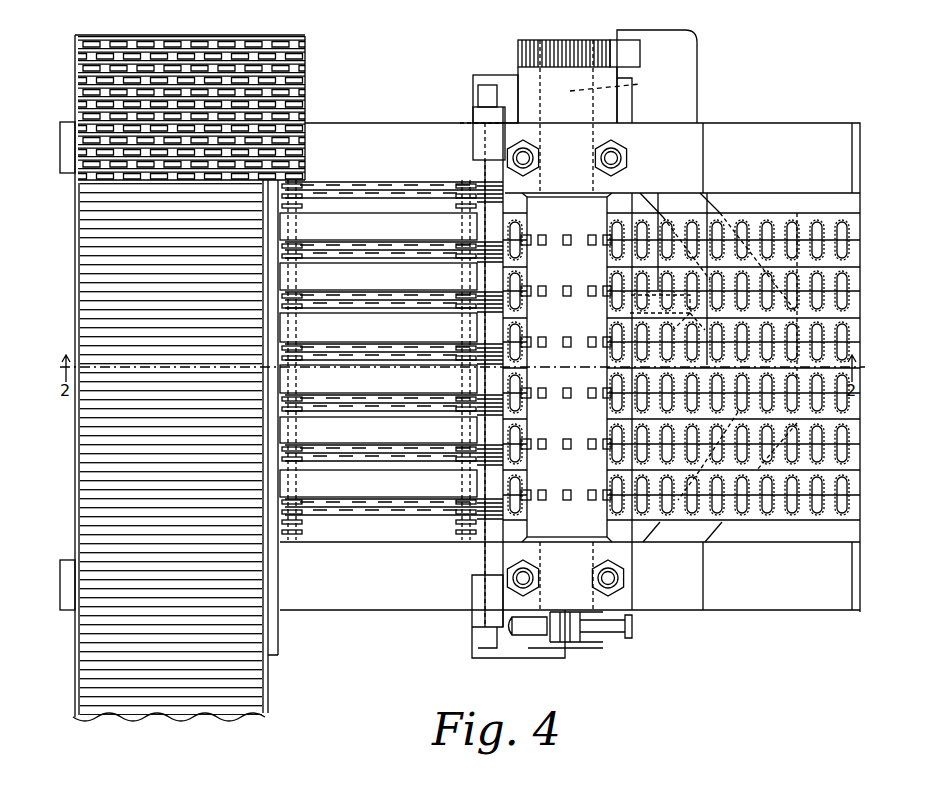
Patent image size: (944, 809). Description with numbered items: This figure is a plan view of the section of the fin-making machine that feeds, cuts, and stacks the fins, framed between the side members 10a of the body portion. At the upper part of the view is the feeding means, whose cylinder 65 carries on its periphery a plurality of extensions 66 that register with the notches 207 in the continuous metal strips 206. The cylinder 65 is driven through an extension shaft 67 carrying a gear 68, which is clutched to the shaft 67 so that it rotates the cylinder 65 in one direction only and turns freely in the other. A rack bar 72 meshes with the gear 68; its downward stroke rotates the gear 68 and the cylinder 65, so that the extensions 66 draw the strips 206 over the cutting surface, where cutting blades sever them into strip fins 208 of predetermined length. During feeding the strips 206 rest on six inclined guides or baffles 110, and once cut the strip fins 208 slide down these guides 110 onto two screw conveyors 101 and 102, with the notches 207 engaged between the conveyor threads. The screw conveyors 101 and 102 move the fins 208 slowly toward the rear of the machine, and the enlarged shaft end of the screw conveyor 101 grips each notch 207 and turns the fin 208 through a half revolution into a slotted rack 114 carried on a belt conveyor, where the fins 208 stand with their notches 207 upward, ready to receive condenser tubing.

The side members 10a is at (797, 130).
The cylinder 65 is at (585, 212).
The extensions 66 is at (542, 332).
The extension shaft 67 is at (620, 85).
The gear 68 is at (580, 48).
The rack bar 72 is at (628, 52).
The screw conveyor 101 is at (292, 540).
The screw conveyor 102 is at (466, 540).
The guides or baffles 110 is at (383, 437).
The rack 114 is at (178, 712).
The strips 206 is at (752, 512).
The notches 207 is at (815, 505).
The strip fins 208 is at (300, 37).